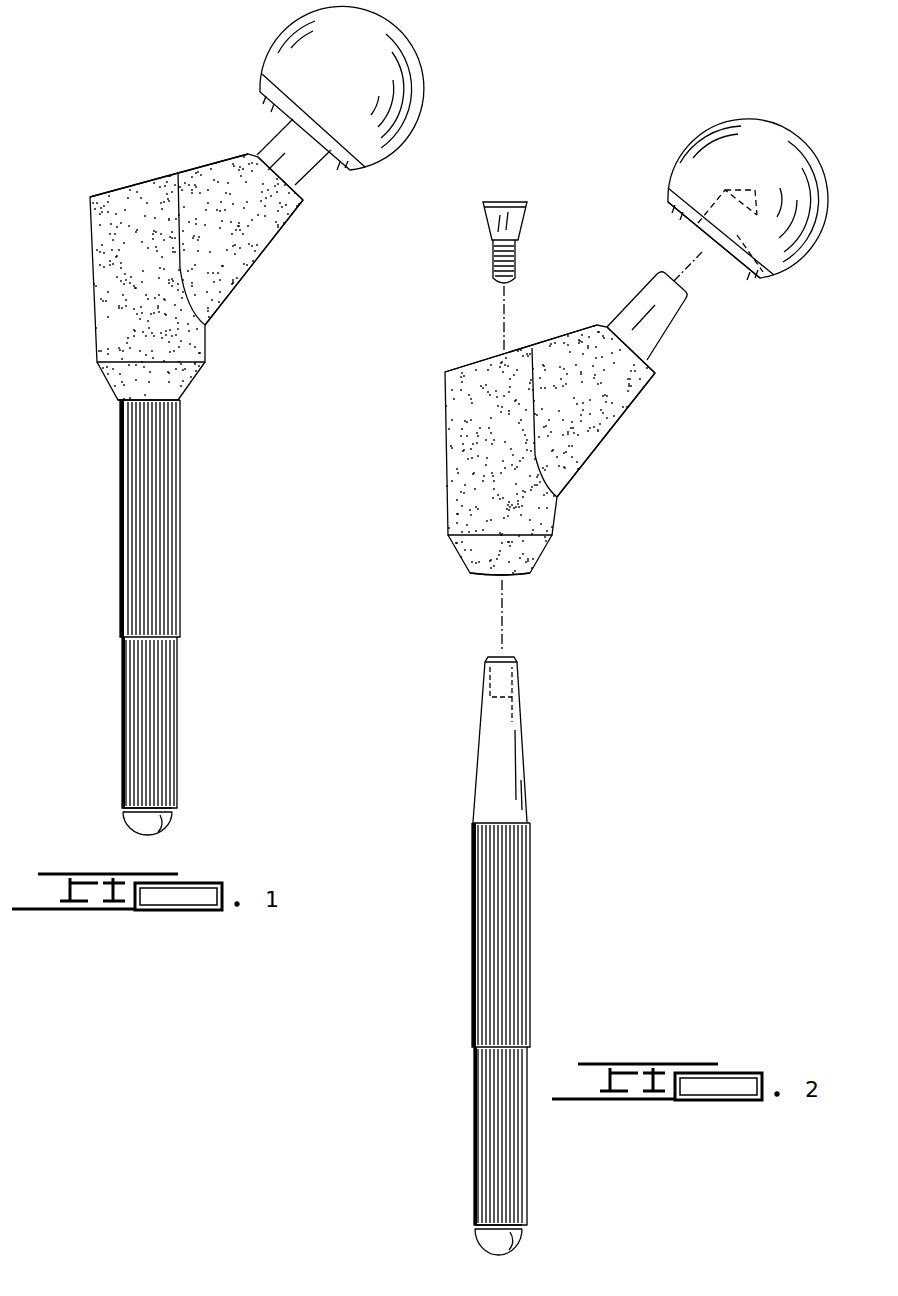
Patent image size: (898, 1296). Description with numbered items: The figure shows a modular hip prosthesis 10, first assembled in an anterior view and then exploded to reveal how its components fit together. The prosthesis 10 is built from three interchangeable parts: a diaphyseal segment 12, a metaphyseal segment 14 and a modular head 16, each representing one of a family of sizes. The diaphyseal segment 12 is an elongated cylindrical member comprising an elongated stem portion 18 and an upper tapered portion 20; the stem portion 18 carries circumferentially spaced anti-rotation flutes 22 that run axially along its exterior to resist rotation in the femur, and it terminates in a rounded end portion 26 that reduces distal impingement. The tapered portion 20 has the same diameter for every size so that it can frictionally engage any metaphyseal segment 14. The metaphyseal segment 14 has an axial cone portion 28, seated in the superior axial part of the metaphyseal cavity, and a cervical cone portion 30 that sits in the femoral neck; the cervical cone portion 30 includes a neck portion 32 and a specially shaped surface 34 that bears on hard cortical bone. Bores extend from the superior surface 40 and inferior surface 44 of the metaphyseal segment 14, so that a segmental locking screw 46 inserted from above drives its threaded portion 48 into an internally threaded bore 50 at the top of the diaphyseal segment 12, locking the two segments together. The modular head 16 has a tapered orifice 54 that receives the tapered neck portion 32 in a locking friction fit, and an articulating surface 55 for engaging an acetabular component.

In FIG. 1, the modular hip prosthesis 10 is at (130, 116).
In FIG. 1, the diaphyseal segment 12 is at (111, 617).
In FIG. 2, the diaphyseal segment 12 is at (460, 952).
In FIG. 1, the metaphyseal segment 14 is at (172, 270).
In FIG. 2, the metaphyseal segment 14 is at (517, 485).
In FIG. 1, the modular head 16 is at (330, 88).
In FIG. 2, the modular head 16 is at (737, 195).
In FIG. 1, the elongated stem portion 18 is at (133, 530).
In FIG. 2, the elongated stem portion 18 is at (488, 910).
In FIG. 2, the tapered portion 20 is at (475, 736).
In FIG. 1, the anti-rotation flutes 22 is at (130, 657).
In FIG. 2, the anti-rotation flutes 22 is at (473, 1067).
In FIG. 1, the rounded end portion 26 is at (130, 827).
In FIG. 2, the rounded end portion 26 is at (487, 1242).
In FIG. 1, the axial cone portion 28 is at (108, 245).
In FIG. 2, the axial cone portion 28 is at (470, 418).
In FIG. 1, the cervical cone portion 30 is at (265, 215).
In FIG. 2, the cervical cone portion 30 is at (603, 407).
In FIG. 1, the neck portion 32 is at (278, 147).
In FIG. 2, the neck portion 32 is at (650, 293).
In FIG. 1, the specially shaped surface 34 is at (233, 293).
In FIG. 2, the specially shaped surface 34 is at (587, 458).
In FIG. 1, the superior surface 40 is at (140, 183).
In FIG. 2, the superior surface 40 is at (487, 357).
In FIG. 2, the inferior surface 44 is at (483, 575).
In FIG. 2, the segmental locking screw 46 is at (517, 261).
In FIG. 2, the threaded portion 48 is at (492, 262).
In FIG. 2, the internally threaded bore 50 is at (497, 672).
In FIG. 2, the orifice 54 is at (773, 282).
In FIG. 1, the articulating surface 55 is at (415, 66).
In FIG. 2, the articulating surface 55 is at (795, 147).